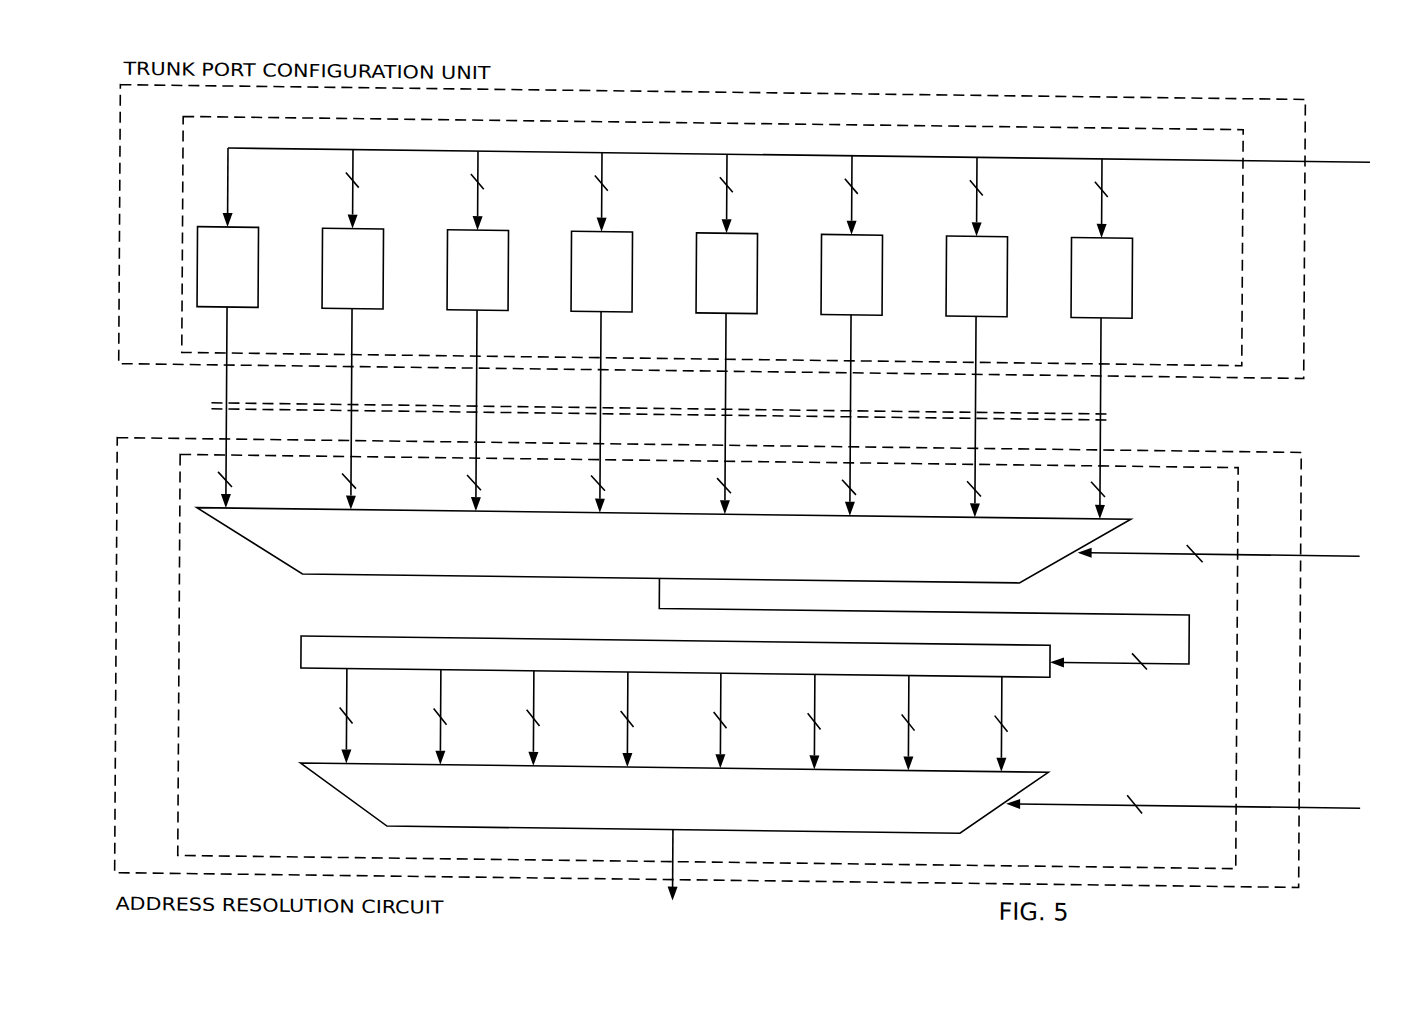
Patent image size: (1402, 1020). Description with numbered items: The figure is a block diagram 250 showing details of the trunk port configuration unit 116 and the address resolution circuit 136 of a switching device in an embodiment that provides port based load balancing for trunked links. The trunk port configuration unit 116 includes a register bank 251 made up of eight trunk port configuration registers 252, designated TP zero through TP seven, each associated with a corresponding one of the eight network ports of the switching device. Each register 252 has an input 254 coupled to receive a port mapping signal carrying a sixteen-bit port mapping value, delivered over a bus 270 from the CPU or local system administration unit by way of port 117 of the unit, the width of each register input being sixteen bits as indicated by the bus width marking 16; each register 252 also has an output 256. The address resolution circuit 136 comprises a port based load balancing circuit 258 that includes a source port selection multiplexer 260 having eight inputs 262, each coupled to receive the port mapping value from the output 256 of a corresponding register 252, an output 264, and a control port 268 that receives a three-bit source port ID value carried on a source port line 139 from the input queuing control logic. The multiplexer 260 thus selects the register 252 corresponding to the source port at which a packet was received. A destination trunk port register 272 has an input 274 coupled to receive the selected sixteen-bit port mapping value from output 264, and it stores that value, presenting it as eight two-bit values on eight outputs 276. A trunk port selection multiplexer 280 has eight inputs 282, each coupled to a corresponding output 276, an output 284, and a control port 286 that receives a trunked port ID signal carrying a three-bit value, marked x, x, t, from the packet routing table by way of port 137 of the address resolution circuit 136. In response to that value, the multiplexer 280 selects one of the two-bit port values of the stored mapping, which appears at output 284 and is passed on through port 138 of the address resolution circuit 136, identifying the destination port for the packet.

The block diagram 250 is at (1336, 110).
The trunk port configuration unit 116 is at (1305, 228).
The register bank 251 is at (1243, 268).
The data bus 270 is at (1105, 149).
The port 117 is at (1306, 150).
The 16-bit bus 16 is at (234, 186).
The input 254 is at (693, 193).
The trunk port configuration register 252 is at (664, 273).
The output 256 is at (690, 406).
The address resolution circuit 136 is at (1305, 463).
The port based load balancing circuit 258 is at (1241, 656).
The inputs 262 is at (650, 493).
The source port selection multiplexer 260 is at (728, 550).
The control port 268 is at (1090, 545).
The source port line 139 is at (1303, 544).
The output 264 is at (664, 577).
The destination trunk port register 272 is at (901, 660).
The input 274 is at (1056, 654).
The outputs 276 is at (696, 713).
The inputs 282 is at (648, 754).
The trunk port selection multiplexer 280 is at (746, 803).
The control port 286 is at (1019, 798).
The port 137 is at (1301, 794).
The output 284 is at (679, 830).
The port 138 is at (671, 880).